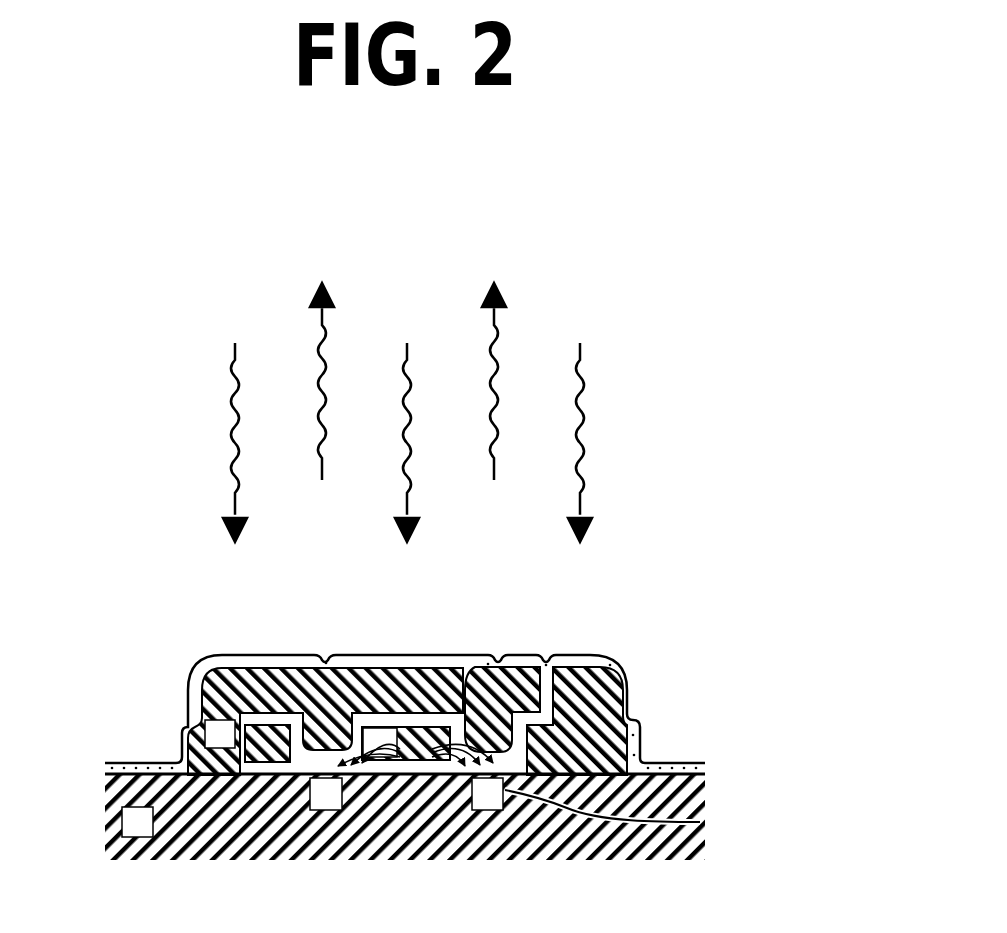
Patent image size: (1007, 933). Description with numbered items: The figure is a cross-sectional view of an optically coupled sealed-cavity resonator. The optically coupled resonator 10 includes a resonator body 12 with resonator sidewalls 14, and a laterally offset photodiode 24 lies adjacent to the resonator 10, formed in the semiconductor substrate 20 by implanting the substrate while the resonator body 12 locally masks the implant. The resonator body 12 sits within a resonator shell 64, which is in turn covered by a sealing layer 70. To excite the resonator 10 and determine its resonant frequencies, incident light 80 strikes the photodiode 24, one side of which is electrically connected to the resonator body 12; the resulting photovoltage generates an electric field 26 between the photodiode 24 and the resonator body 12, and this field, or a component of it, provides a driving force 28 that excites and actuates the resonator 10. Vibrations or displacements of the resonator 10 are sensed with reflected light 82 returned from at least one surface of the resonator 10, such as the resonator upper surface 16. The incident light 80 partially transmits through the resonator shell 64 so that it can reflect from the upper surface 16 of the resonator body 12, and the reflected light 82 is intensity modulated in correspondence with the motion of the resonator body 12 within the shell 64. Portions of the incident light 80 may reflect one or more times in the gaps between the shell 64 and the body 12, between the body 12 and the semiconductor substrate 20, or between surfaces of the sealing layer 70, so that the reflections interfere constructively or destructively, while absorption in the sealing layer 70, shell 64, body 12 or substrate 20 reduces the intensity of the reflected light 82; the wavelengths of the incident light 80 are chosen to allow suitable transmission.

The optically coupled resonator 10 is at (175, 613).
The resonator body 12 is at (410, 752).
The resonator sidewalls 14 is at (466, 708).
The resonator upper surface 16 is at (383, 713).
The semiconductor substrate 20 is at (703, 797).
The laterally offset photodiode 24 is at (700, 822).
The electric field 26 is at (448, 772).
The driving force 28 is at (388, 763).
The resonator shell 64 is at (523, 667).
The sealing layer 70 is at (617, 670).
The incident light 80 is at (587, 493).
The reflected light 82 is at (502, 328).